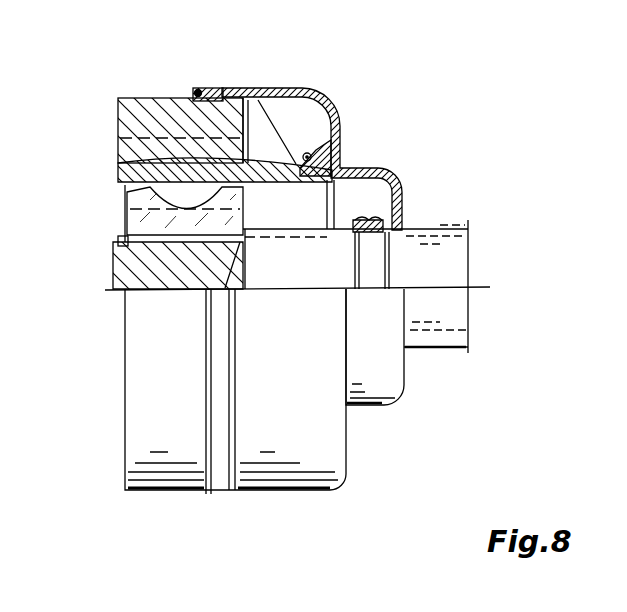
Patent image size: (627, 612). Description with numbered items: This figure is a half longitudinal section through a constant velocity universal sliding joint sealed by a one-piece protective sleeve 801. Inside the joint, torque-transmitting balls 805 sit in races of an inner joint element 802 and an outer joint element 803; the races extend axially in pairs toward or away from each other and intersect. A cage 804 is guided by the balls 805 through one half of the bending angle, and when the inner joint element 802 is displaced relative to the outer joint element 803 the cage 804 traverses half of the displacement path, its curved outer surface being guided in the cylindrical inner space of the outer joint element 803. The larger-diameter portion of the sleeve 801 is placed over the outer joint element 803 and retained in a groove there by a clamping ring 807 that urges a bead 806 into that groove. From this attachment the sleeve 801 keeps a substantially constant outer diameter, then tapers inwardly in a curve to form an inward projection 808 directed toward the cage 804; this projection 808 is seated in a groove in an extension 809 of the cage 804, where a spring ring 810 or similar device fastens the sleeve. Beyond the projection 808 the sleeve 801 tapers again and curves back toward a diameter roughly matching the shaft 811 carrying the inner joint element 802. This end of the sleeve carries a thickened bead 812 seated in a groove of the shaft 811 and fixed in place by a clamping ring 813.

The protective sleeve 801 is at (428, 474).
The inner joint element 802 is at (143, 275).
The outer joint element 803 is at (132, 148).
The cage 804 is at (135, 160).
The balls 805 is at (157, 173).
The bead 806 is at (196, 92).
The clamping ring 807 is at (210, 88).
The inward projection 808 is at (305, 153).
The extension of the cage 809 is at (258, 100).
The spring ring 810 is at (305, 90).
The shaft 811 is at (410, 237).
The seal 812 is at (355, 220).
The clamping ring 813 is at (373, 220).